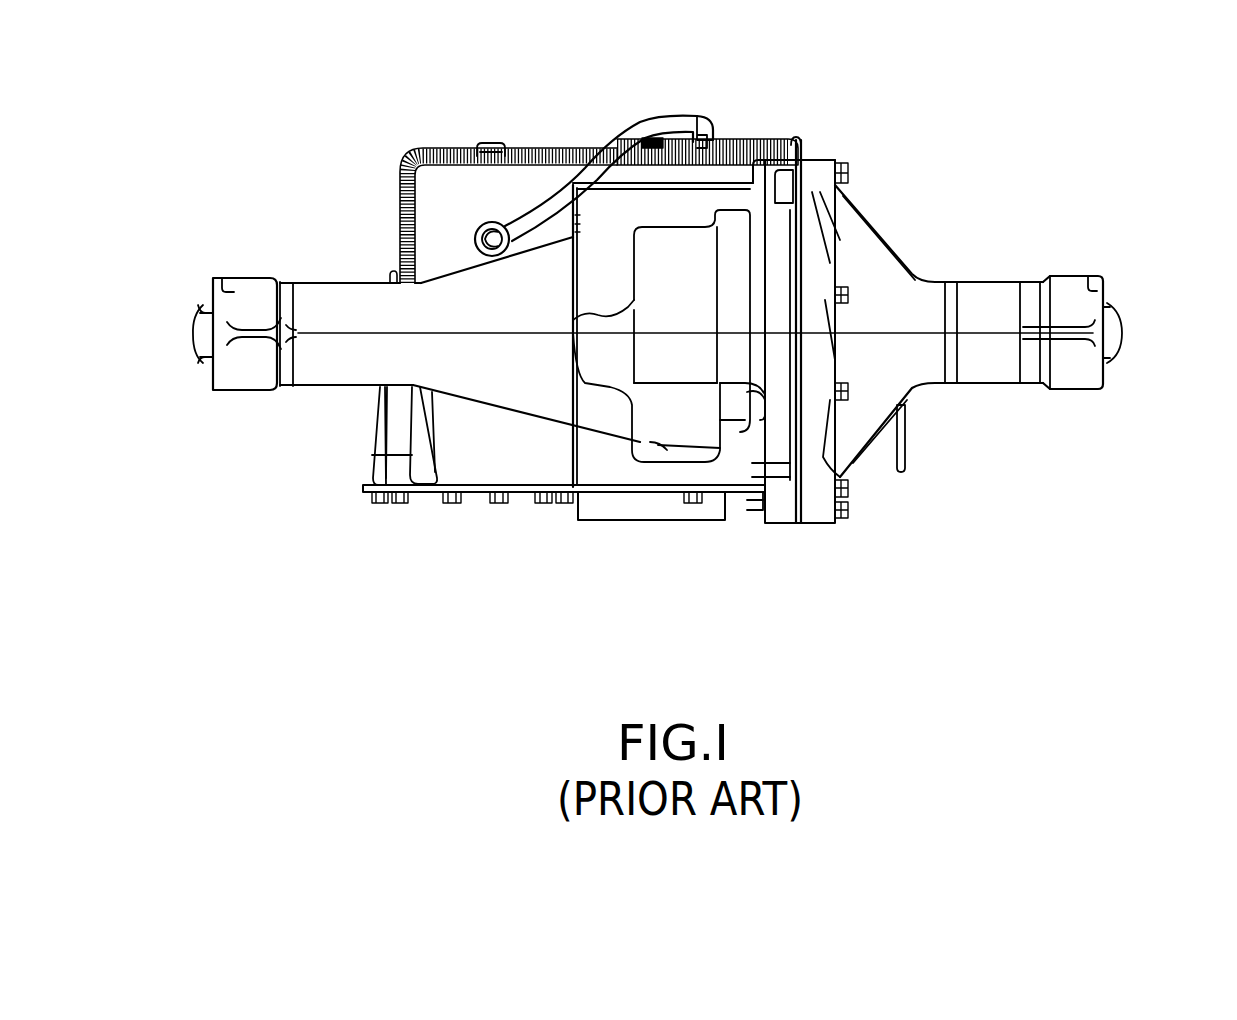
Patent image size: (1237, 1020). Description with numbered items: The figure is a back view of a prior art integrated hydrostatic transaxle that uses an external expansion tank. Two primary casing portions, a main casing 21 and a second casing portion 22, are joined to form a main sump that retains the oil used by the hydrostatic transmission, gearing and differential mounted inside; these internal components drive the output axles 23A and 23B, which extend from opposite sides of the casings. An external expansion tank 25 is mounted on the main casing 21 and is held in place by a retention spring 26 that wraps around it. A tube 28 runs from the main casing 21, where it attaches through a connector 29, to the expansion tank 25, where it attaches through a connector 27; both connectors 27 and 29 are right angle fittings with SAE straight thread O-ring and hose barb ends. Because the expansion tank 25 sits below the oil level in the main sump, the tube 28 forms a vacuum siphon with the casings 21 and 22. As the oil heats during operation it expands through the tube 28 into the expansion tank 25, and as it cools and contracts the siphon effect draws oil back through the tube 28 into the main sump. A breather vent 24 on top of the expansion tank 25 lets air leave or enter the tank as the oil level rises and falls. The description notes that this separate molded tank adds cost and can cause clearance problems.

The main casing 21 is at (810, 148).
The casing portion 22 is at (873, 233).
The output axle 23A is at (197, 333).
The output axle 23B is at (1130, 331).
The breather vent 24 is at (491, 143).
The external expansion tank 25 is at (440, 202).
The retention spring 26 is at (403, 148).
The connector 27 is at (480, 224).
The tube 28 is at (609, 140).
The connector 29 is at (718, 134).